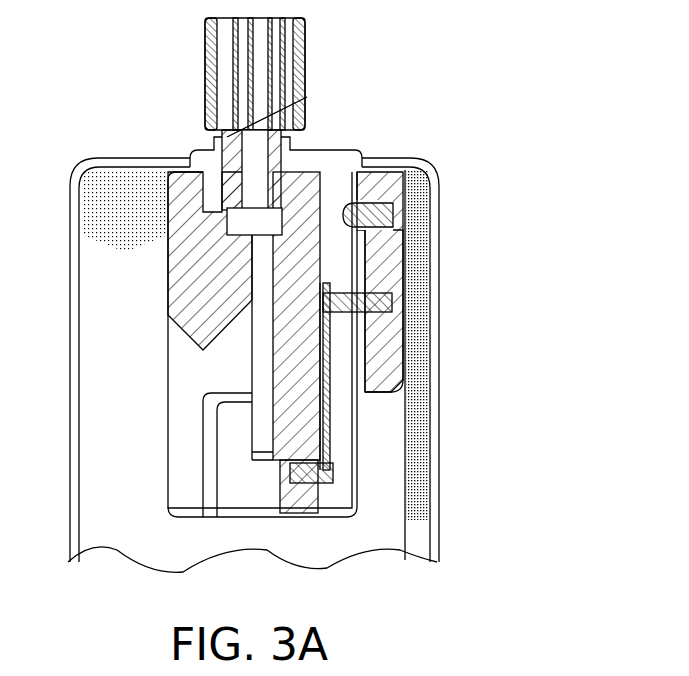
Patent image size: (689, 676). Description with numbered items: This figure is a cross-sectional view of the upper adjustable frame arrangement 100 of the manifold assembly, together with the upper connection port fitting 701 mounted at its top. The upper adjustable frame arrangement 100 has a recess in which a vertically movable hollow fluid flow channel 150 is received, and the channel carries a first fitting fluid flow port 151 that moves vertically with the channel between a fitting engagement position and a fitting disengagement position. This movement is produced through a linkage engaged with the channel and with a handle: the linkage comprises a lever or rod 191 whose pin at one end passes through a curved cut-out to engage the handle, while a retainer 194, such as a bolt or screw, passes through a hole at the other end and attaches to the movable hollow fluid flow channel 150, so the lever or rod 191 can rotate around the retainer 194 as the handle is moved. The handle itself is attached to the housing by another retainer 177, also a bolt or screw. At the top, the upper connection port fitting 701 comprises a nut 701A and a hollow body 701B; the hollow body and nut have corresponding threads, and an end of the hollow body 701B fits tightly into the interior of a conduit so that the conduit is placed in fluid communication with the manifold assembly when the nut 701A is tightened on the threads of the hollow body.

The upper adjustable frame arrangement 100 is at (498, 256).
The vertically movable hollow fluid flow channel 150 is at (302, 338).
The first fitting fluid flow port 151 is at (258, 273).
The retainer 177 is at (356, 206).
The lever or rod 191 is at (330, 402).
The retainer 194 is at (340, 488).
The upper connection port fitting 701 is at (222, 121).
The nut 701A is at (293, 18).
The hollow body 701B is at (285, 160).